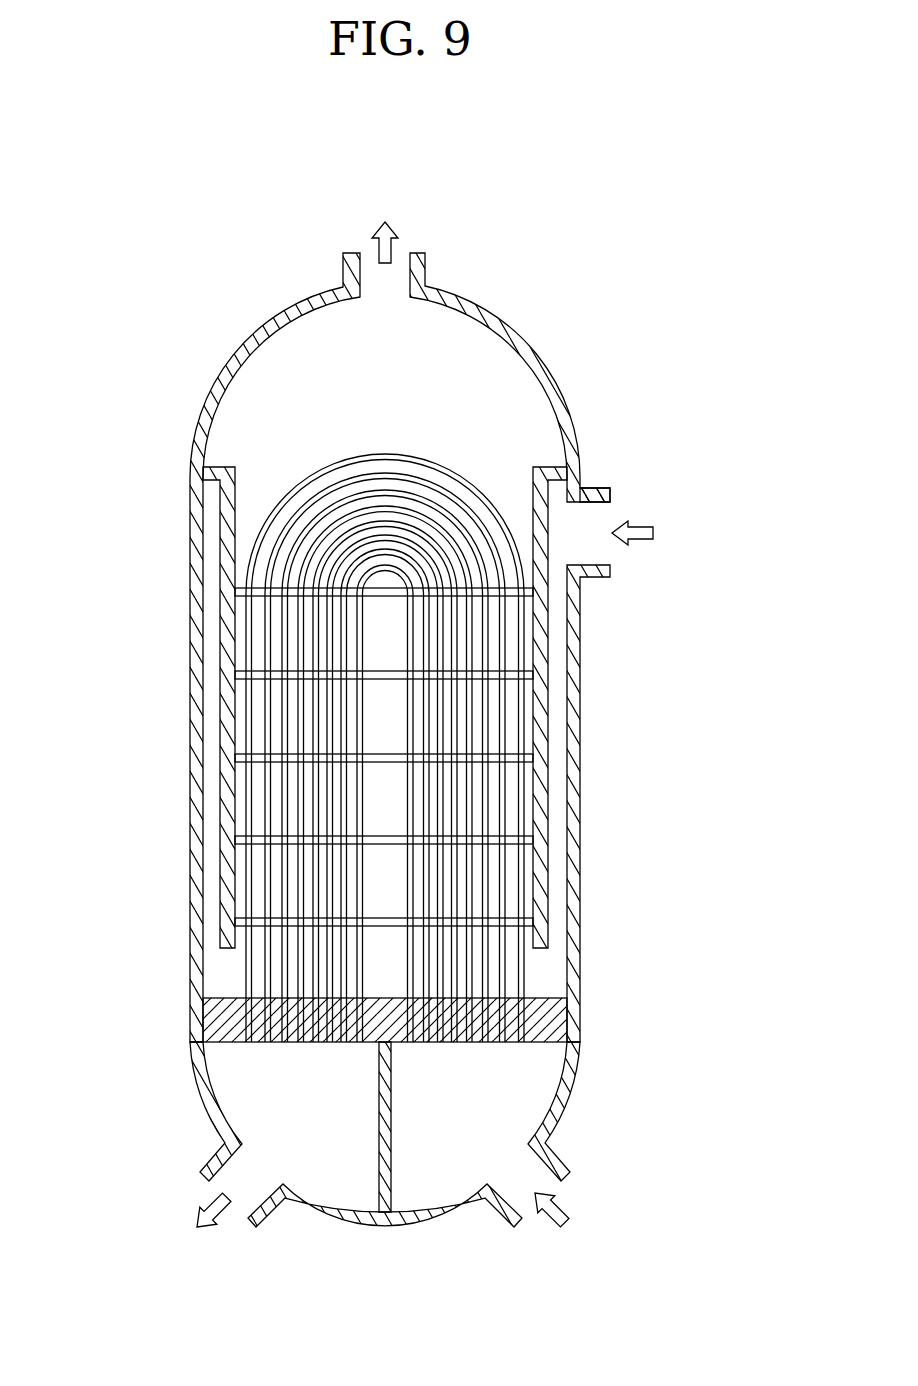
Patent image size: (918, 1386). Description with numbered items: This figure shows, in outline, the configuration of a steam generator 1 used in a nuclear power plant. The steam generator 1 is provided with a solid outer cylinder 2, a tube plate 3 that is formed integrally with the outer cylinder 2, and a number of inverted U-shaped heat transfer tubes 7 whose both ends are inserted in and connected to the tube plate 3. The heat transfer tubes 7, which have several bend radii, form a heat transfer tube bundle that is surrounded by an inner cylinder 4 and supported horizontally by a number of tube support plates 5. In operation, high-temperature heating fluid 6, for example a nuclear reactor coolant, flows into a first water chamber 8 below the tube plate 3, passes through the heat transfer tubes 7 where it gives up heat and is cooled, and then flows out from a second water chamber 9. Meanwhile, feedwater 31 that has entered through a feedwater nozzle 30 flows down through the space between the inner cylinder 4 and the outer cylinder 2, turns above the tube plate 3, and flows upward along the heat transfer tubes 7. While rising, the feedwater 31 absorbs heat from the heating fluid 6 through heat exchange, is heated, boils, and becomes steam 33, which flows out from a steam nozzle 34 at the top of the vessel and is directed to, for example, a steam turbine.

The steam generator 1 is at (106, 174).
The outer cylinder 2 is at (581, 847).
The tube plate 3 is at (553, 1016).
The inner cylinder 4 is at (220, 603).
The tube support plate 5 is at (526, 678).
The heating fluid 6 is at (566, 1207).
The heat transfer tube 7 is at (524, 785).
The first water chamber 8 is at (510, 1083).
The second water chamber 9 is at (240, 1088).
The feedwater nozzle 30 is at (598, 489).
The feedwater 31 is at (640, 527).
The steam 33 is at (378, 226).
The steam nozzle 34 is at (427, 268).